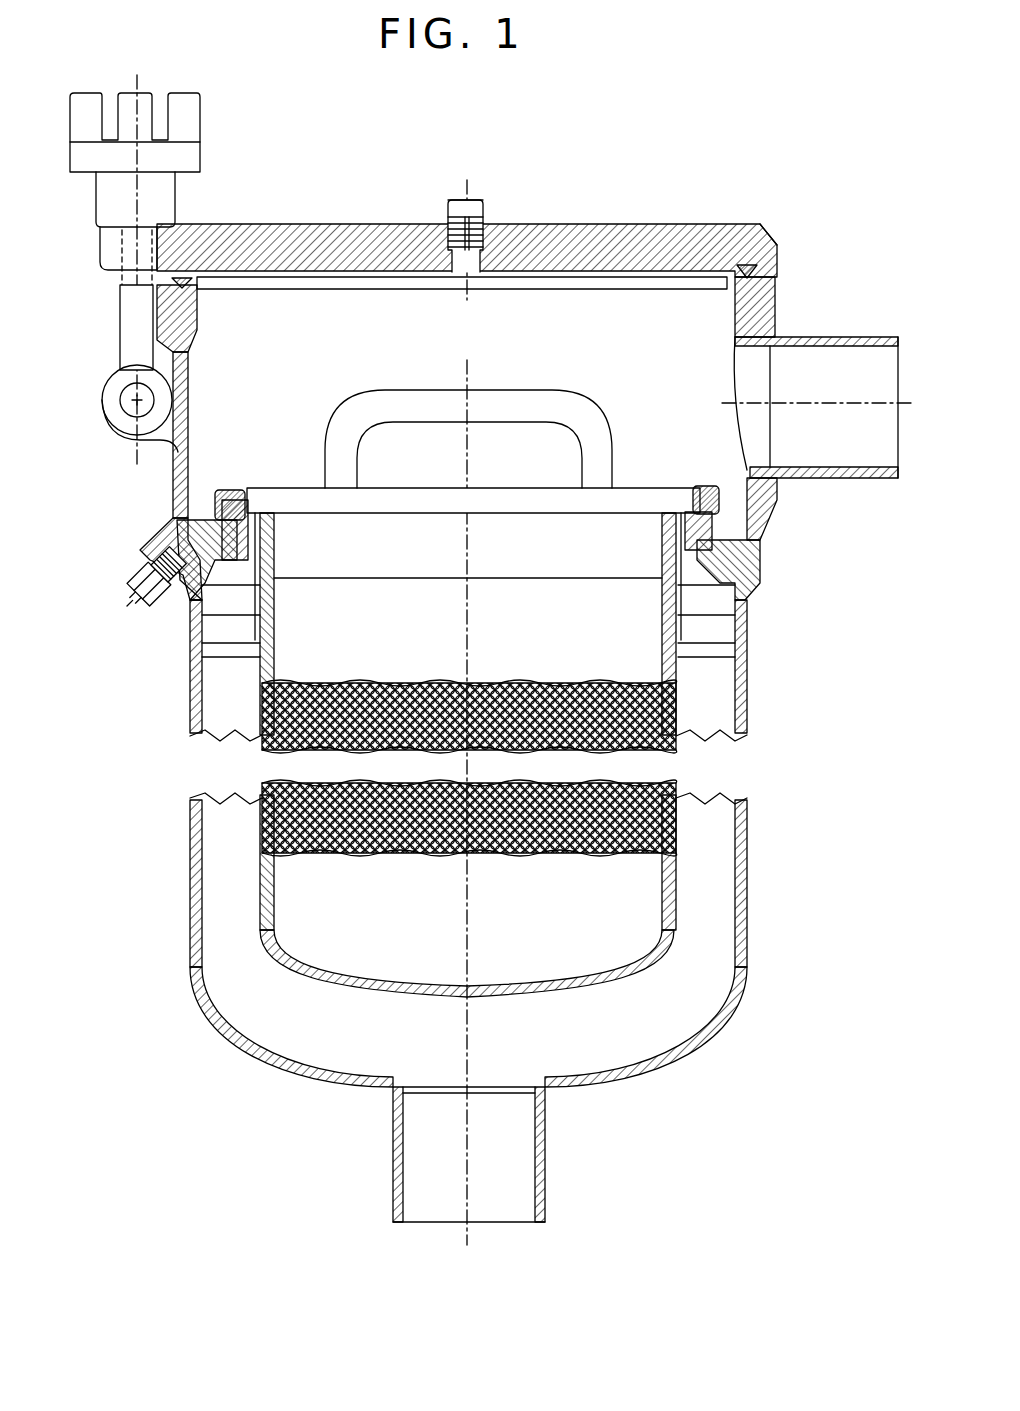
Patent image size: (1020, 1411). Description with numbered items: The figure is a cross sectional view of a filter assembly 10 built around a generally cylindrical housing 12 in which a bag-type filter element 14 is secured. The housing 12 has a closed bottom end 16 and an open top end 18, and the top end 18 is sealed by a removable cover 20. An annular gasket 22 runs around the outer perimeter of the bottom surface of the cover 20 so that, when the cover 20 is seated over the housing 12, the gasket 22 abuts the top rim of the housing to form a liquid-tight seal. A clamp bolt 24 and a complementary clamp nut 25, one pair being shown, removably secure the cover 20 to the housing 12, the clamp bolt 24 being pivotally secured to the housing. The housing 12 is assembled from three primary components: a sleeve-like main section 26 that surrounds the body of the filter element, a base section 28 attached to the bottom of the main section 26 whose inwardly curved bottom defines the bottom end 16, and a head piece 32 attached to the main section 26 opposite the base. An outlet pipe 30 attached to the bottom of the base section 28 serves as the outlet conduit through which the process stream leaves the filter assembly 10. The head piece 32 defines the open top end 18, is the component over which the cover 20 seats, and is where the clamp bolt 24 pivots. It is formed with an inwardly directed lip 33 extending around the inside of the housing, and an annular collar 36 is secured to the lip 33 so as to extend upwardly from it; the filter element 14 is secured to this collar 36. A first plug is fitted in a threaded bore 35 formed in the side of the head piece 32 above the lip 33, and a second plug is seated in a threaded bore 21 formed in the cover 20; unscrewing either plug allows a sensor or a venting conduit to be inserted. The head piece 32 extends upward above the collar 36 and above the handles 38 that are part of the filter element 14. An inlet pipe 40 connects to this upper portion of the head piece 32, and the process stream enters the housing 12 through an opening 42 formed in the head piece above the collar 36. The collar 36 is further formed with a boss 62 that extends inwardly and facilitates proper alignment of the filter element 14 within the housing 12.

The filter assembly 10 is at (700, 185).
The housing 12 is at (128, 468).
The bag-type filter element 14 is at (638, 465).
The closed bottom end 16 is at (315, 1100).
The open top end 18 is at (155, 305).
The cover 20 is at (585, 222).
The threaded bore 21 is at (490, 225).
The annular gasket 22 is at (778, 245).
The clamp bolt 24 is at (128, 340).
The clamp nut 25 is at (195, 120).
The main section 26 is at (135, 695).
The base section 28 is at (212, 1022).
The outlet pipe 30 is at (545, 1153).
The head piece 32 is at (765, 310).
The inwardly directed lip 33 is at (740, 575).
The threaded bore 35 is at (160, 555).
The annular collar 36 is at (203, 505).
The handles 38 is at (385, 408).
The inlet pipe 40 is at (810, 478).
The opening 42 is at (748, 372).
The boss 62 is at (250, 500).